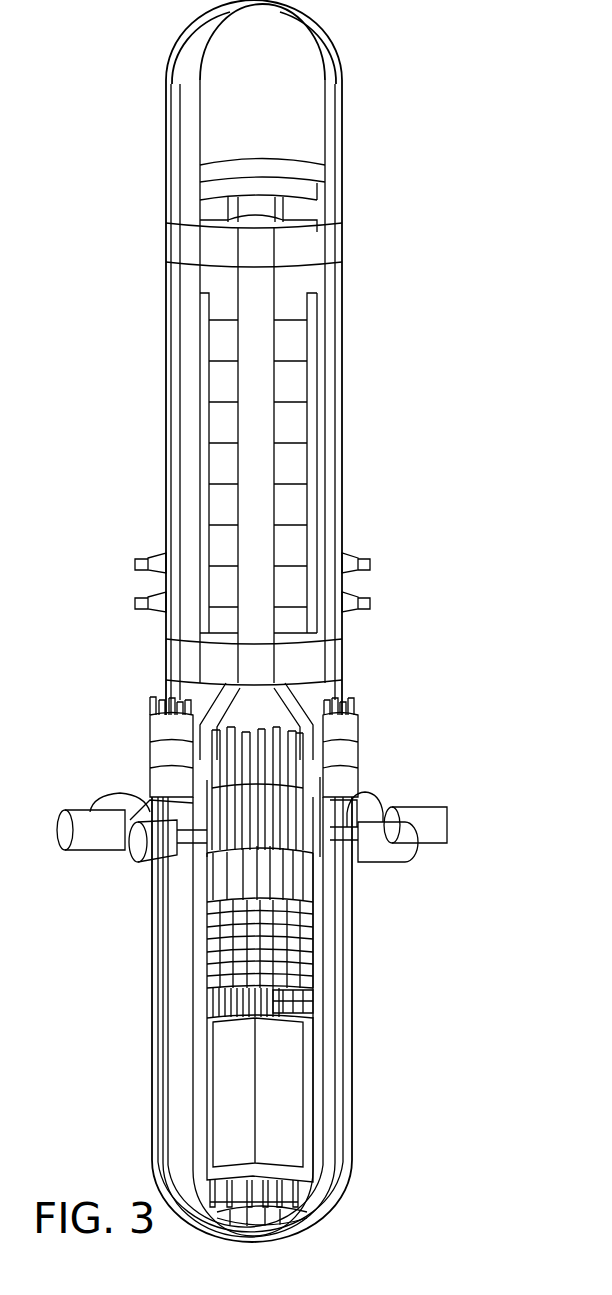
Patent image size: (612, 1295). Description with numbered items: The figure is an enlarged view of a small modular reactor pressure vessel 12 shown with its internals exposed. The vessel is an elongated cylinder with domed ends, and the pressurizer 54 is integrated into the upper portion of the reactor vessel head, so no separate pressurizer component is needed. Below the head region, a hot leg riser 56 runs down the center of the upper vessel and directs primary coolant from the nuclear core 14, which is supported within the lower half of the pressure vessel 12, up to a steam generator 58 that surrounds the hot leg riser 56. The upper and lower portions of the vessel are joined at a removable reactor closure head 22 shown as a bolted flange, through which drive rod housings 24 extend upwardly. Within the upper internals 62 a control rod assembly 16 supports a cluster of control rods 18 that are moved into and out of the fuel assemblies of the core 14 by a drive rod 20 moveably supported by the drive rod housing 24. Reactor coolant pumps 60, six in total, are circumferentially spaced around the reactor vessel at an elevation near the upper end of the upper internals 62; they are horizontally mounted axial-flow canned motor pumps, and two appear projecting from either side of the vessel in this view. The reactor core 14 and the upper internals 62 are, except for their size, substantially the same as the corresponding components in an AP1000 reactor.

The reactor pressure vessel 12 is at (353, 1070).
The nuclear core 14 is at (290, 1127).
The control rod assembly 16 is at (273, 990).
The control rods 18 is at (300, 1010).
The drive rod 20 is at (283, 882).
The reactor closure head 22 is at (355, 707).
The drive rod housing 24 is at (277, 836).
The pressurizer 54 is at (343, 226).
The hot leg riser 56 is at (262, 513).
The steam generator 58 is at (287, 443).
The reactor coolant pumps 60 is at (418, 856).
The upper internals 62 is at (245, 945).